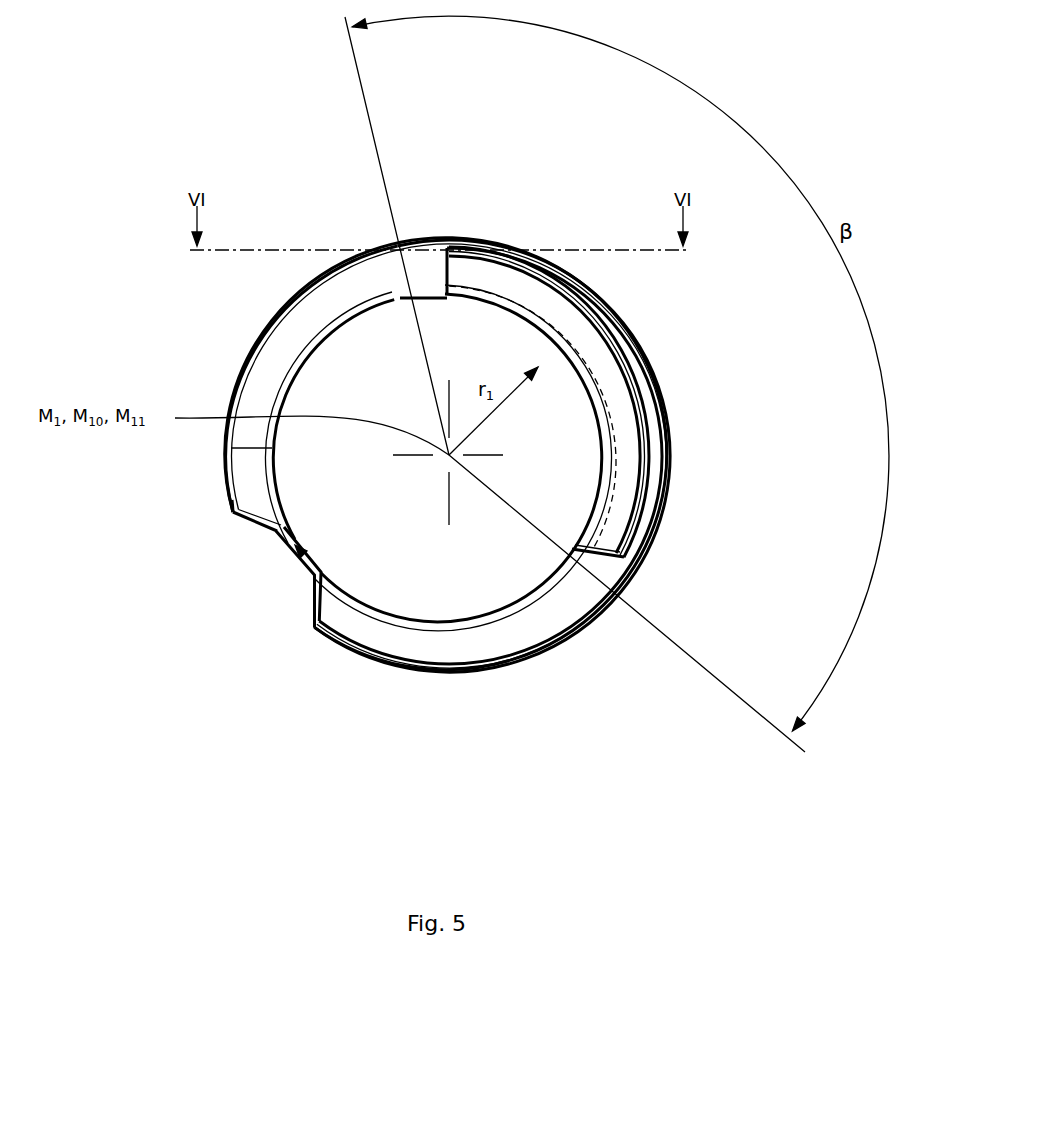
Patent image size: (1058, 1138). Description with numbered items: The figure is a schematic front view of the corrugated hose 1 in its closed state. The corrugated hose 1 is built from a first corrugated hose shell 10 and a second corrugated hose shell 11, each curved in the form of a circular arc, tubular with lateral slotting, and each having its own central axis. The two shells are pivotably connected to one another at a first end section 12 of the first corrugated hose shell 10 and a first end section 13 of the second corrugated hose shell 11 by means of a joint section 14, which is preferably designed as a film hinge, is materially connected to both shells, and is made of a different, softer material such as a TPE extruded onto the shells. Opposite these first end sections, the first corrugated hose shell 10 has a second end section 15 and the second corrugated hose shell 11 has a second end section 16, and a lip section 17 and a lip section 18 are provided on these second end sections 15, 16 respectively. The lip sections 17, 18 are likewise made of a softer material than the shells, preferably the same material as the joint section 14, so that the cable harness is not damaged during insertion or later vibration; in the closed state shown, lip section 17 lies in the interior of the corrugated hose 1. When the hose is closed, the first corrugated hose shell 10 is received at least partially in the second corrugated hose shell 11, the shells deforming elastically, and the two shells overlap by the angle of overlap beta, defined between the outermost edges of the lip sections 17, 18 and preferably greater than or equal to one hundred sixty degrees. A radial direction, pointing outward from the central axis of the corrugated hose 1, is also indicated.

The corrugated hose 1 is at (491, 188).
The first corrugated hose shell 10 is at (288, 318).
The second corrugated hose shell 11 is at (558, 620).
The first end section 12 is at (247, 488).
The first end section 13 is at (352, 627).
The joint section 14 is at (296, 546).
The second end section 15 is at (635, 468).
The second end section 16 is at (432, 262).
The lip section 17 is at (603, 562).
The lip section 18 is at (425, 287).